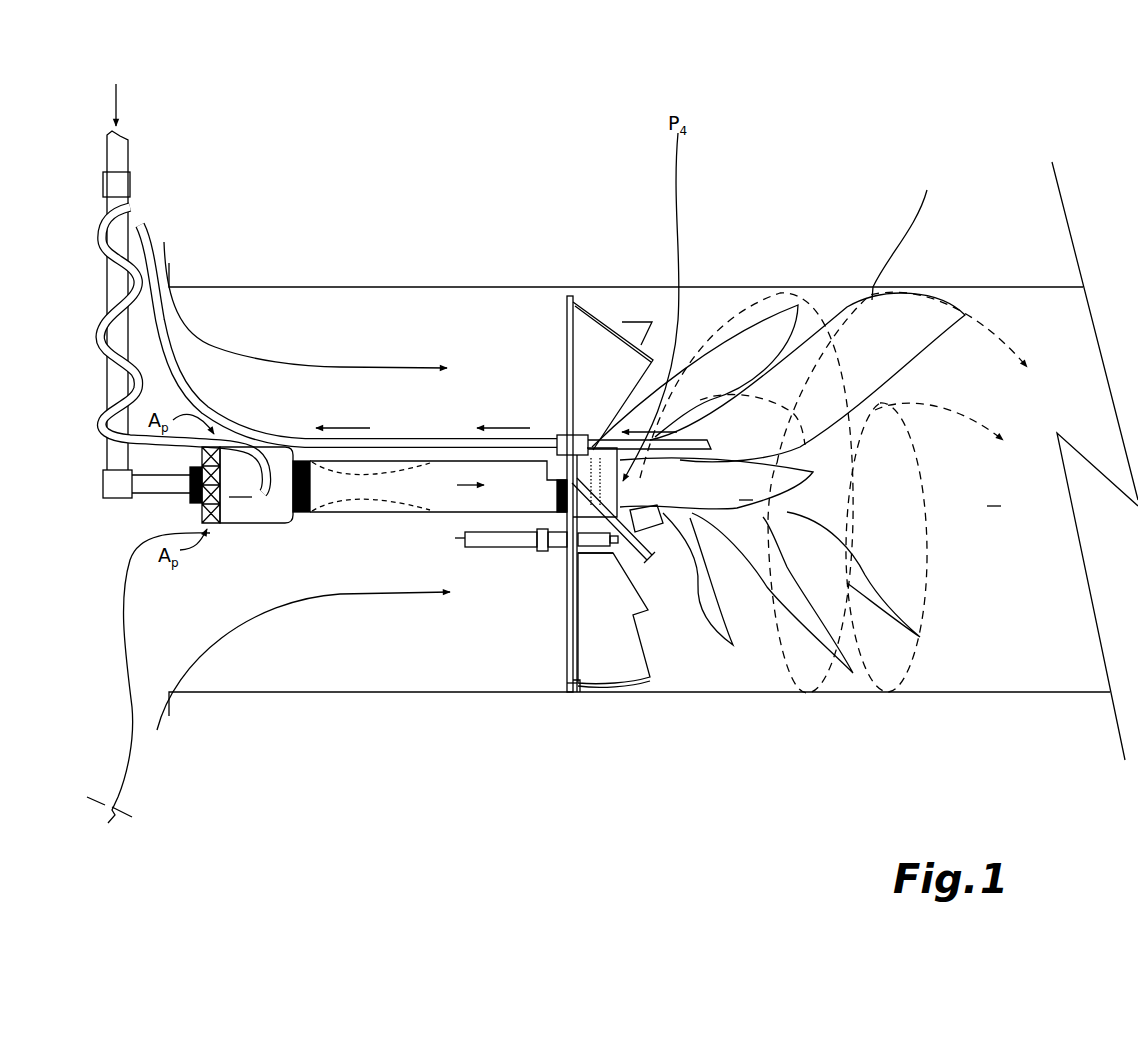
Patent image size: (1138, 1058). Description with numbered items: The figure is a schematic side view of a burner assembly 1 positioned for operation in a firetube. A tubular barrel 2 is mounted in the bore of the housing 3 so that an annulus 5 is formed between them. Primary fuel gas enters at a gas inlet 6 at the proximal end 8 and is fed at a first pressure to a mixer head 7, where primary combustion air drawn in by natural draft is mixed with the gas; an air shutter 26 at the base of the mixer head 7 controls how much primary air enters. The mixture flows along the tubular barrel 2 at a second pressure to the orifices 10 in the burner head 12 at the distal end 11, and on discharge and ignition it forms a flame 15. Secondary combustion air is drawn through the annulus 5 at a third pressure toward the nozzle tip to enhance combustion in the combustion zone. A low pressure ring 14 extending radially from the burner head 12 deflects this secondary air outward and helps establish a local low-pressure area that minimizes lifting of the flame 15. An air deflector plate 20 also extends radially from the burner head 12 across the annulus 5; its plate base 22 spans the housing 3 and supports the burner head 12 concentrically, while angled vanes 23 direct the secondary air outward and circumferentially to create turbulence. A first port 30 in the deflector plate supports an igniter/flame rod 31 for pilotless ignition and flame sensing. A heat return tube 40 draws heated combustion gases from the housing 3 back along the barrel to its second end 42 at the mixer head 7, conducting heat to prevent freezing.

The burner assembly 1 is at (413, 232).
The tubular barrel 2 is at (410, 513).
The housing 3 is at (705, 287).
The annulus 5 is at (381, 332).
The gas inlet 6 is at (117, 228).
The mixer head 7 is at (257, 517).
The proximal end 8 is at (268, 457).
The orifices 10 is at (592, 435).
The distal end 11 is at (578, 553).
The burner head 12 is at (567, 693).
The low pressure ring 14 is at (667, 530).
The flame 15 is at (855, 320).
The air deflector plate 20 is at (573, 693).
The plate base 22 is at (575, 300).
The vanes 23 is at (612, 382).
The air shutter 26 is at (207, 523).
The first port 30 is at (543, 551).
The igniter/flame rod 31 is at (663, 513).
The heat return tube 40 is at (653, 510).
The second end 42 is at (287, 527).